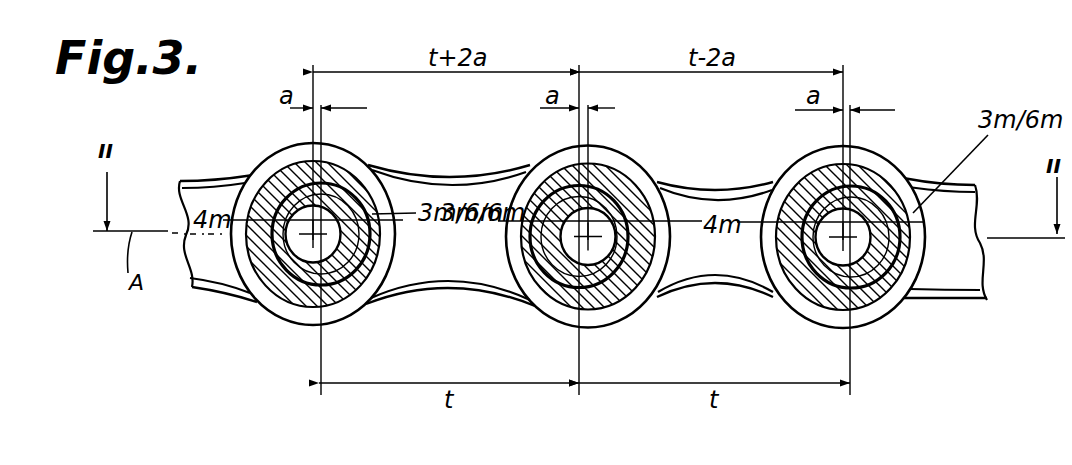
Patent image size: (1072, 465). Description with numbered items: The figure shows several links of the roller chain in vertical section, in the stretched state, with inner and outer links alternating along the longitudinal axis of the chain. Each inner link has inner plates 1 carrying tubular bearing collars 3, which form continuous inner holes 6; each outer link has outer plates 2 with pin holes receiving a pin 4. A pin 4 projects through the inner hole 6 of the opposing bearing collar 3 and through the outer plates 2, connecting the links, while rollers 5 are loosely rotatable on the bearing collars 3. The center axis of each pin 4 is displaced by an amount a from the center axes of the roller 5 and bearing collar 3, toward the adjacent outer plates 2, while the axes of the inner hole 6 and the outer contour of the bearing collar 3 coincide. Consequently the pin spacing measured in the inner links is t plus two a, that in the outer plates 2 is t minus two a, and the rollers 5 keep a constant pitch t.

The inner plate 1 is at (457, 180).
The outer plate 2 is at (203, 187).
The bearing collar 3 is at (352, 198).
The pin 4 is at (327, 253).
The roller 5 is at (273, 280).
The inner hole 6 is at (347, 243).